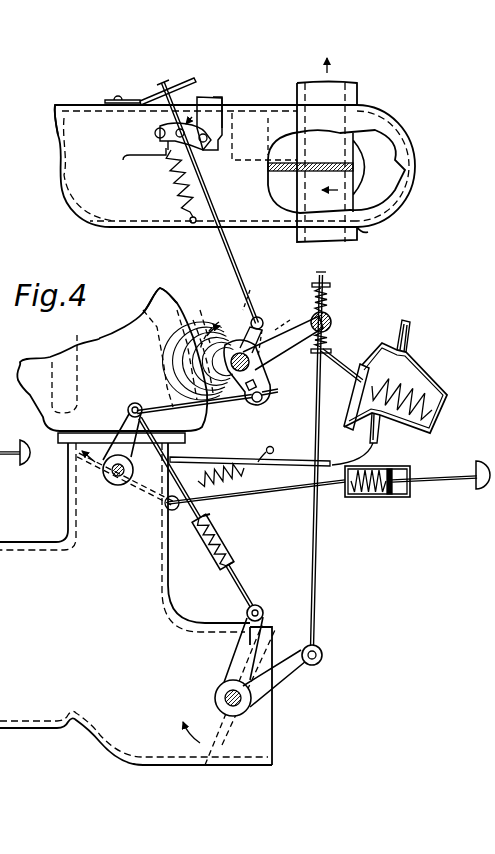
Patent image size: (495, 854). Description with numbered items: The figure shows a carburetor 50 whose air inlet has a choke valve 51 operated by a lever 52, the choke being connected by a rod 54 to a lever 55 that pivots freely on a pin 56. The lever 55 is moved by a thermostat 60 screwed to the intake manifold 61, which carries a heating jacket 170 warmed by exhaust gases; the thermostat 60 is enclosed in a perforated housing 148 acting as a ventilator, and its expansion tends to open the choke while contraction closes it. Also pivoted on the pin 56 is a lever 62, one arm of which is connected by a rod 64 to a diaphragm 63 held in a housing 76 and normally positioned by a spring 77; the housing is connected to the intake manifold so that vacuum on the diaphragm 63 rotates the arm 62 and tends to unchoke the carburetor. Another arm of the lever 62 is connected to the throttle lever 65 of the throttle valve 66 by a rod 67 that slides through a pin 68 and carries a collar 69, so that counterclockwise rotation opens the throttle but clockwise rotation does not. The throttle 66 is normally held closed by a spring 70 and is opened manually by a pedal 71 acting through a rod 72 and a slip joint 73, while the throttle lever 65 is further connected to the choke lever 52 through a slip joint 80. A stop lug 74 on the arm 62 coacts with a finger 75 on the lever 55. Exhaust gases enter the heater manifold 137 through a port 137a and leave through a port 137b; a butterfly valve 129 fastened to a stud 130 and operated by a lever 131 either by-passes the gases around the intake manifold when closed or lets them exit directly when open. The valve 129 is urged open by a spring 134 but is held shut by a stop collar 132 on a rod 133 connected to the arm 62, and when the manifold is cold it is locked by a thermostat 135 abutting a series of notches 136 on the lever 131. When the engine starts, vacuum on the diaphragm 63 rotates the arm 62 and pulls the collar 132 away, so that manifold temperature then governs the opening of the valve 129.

The carburetor 50 is at (136, 604).
The choke valve 51 is at (205, 731).
The lever 52 is at (282, 677).
The rod 54 is at (310, 566).
The lever 55 is at (284, 332).
The pin 56 is at (230, 362).
The thermostat 60 is at (243, 322).
The intake manifold 61 is at (330, 243).
The lever 62 is at (258, 317).
The diaphragm 63 is at (370, 362).
The rod 64 is at (338, 368).
The throttle lever 65 is at (127, 417).
The throttle valve 66 is at (136, 490).
The rod 67 is at (224, 403).
The pin 68 is at (262, 404).
The collar 69 is at (268, 401).
The spring 70 is at (240, 470).
The pedal 71 is at (478, 460).
The rod 72 is at (256, 498).
The slip joint 73 is at (392, 494).
The stop lug 74 is at (267, 371).
The finger 75 is at (236, 392).
The housing 76 is at (413, 343).
The spring 77 is at (413, 372).
The slip joint 80 is at (234, 547).
The butterfly valve 129 is at (243, 116).
The stud 130 is at (240, 160).
The lever 131 is at (218, 100).
The stop collar 132 is at (150, 172).
The rod 133 is at (213, 203).
The spring 134 is at (173, 198).
The thermostat 135 is at (180, 73).
The notches 136 is at (213, 97).
The heater manifold 137 is at (86, 90).
The port 137a is at (290, 124).
The port 137b is at (72, 166).
The housing 148 is at (264, 302).
The heating jacket 170 is at (143, 307).